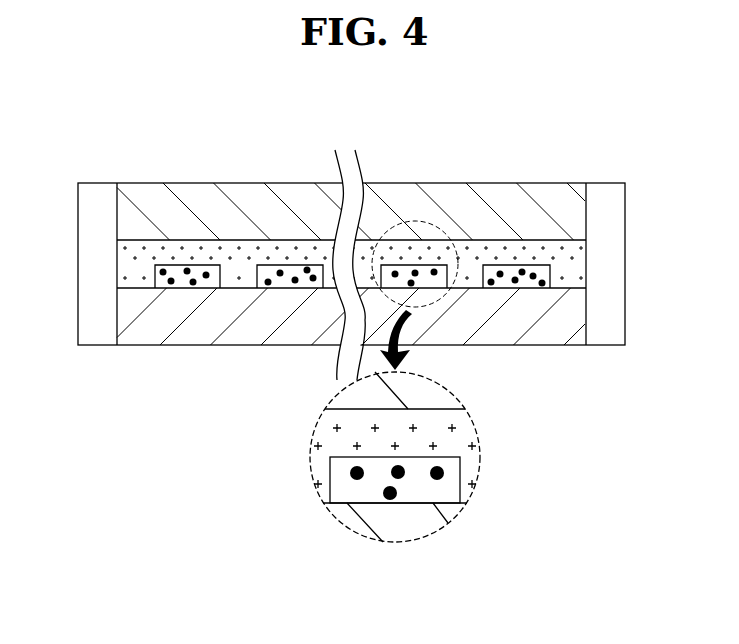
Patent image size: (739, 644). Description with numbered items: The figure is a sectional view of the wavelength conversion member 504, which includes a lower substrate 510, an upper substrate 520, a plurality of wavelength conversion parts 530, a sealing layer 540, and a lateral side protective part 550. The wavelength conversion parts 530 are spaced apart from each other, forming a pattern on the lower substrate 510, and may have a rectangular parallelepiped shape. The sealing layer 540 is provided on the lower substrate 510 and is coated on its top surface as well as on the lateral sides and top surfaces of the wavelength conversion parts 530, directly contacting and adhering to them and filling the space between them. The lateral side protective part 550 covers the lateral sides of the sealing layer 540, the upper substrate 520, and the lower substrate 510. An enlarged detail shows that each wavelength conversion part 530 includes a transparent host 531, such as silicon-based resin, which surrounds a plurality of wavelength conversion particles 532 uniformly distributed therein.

The wavelength conversion member 504 is at (109, 128).
The lateral side protective part 550 is at (100, 263).
The upper substrate 520 is at (573, 210).
The lower substrate 510 is at (577, 323).
The sealing layer 540 is at (457, 423).
The wavelength conversion parts 530 is at (395, 535).
The host 531 is at (418, 493).
The wavelength conversion particles 532 is at (357, 480).